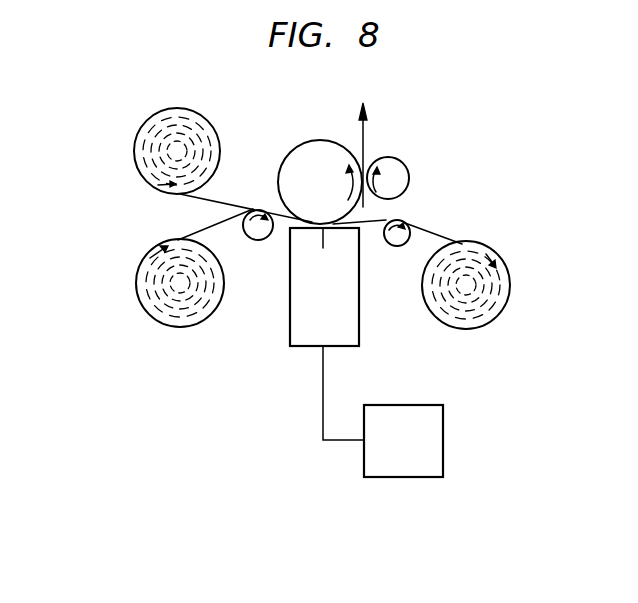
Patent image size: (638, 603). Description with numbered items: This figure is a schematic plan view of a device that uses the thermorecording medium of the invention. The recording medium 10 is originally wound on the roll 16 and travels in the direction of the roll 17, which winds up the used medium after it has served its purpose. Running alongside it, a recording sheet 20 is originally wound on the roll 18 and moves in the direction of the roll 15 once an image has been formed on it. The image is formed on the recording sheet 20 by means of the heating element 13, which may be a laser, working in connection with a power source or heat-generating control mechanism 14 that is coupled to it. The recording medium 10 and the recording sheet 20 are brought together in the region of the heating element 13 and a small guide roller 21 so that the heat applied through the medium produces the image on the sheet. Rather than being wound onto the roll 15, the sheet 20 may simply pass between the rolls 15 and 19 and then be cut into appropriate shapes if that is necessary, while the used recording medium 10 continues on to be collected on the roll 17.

The recording medium 10 is at (195, 230).
The heating element 13 is at (343, 326).
The power source or heat-generating control mechanism 14 is at (435, 437).
The roll 15 is at (302, 163).
The roll 16 is at (178, 323).
The roll 17 is at (497, 297).
The roll 18 is at (200, 122).
The roll 19 is at (397, 173).
The recording sheet 20 is at (232, 202).
The roller 21 is at (257, 228).